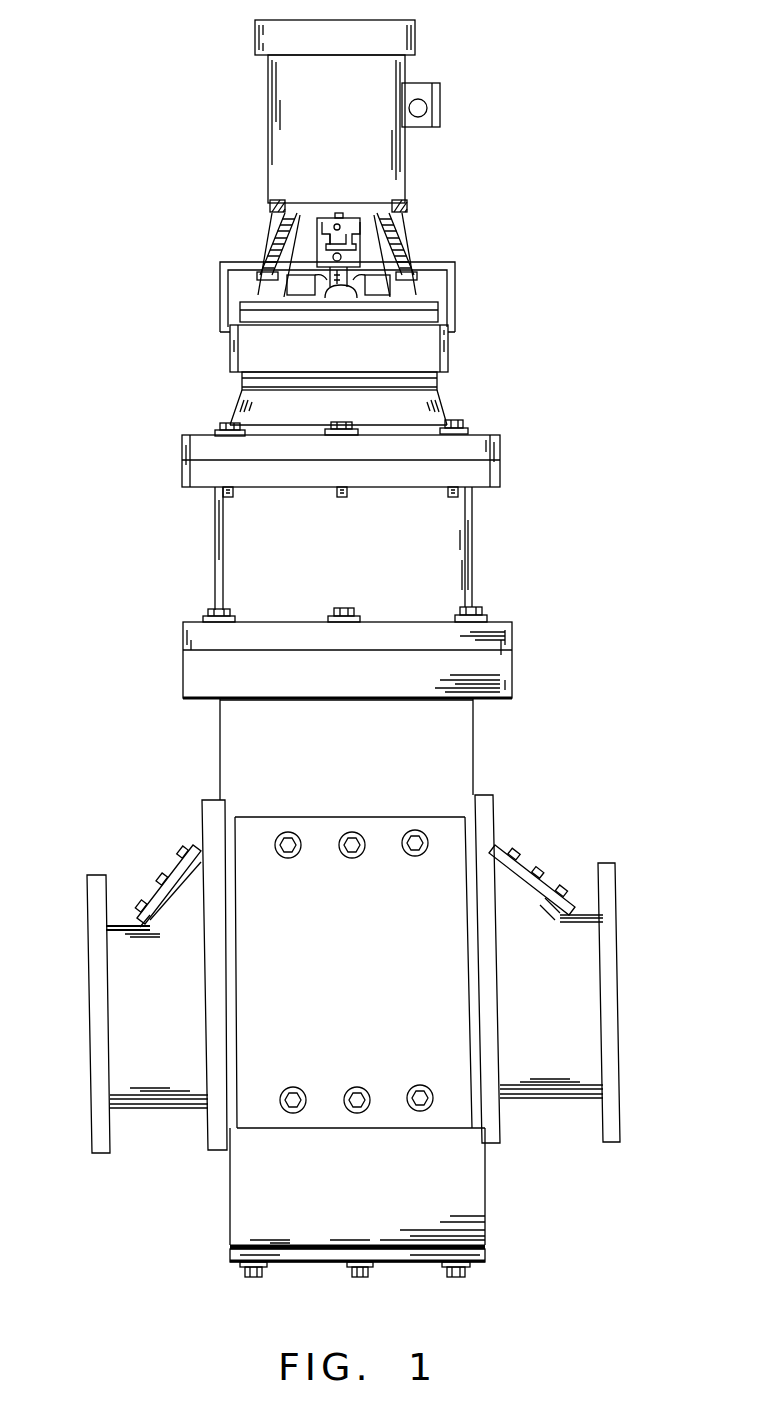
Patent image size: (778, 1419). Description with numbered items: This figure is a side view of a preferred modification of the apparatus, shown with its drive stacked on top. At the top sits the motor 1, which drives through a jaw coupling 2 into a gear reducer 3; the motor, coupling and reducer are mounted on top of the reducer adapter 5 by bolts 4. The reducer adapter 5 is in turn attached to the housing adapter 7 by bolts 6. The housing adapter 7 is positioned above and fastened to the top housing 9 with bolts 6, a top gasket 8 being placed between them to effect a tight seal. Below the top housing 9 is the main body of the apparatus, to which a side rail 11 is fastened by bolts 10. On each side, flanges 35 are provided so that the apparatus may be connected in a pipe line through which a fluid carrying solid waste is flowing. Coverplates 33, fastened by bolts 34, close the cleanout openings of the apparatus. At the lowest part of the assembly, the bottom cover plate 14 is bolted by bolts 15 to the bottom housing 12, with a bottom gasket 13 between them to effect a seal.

The motor 1 is at (382, 163).
The jaw coupling 2 is at (341, 257).
The gear reducer 3 is at (417, 350).
The bolts 4 is at (457, 423).
The reducer adapter 5 is at (442, 528).
The bolts 6 is at (477, 605).
The housing adapter 7 is at (487, 665).
The top gasket 8 is at (448, 700).
The top housing 9 is at (442, 748).
The bolts 10 is at (415, 830).
The side rail 11 is at (440, 860).
The bottom housing 12 is at (455, 1208).
The bottom gasket 13 is at (268, 1240).
The bottom cover plate 14 is at (303, 1265).
The bolts 15 is at (460, 1275).
The coverplates 33 is at (162, 870).
The bolts 34 is at (150, 887).
The flanges 35 is at (100, 990).